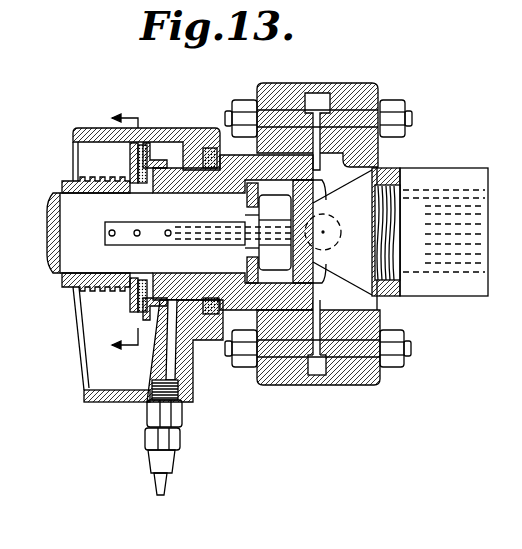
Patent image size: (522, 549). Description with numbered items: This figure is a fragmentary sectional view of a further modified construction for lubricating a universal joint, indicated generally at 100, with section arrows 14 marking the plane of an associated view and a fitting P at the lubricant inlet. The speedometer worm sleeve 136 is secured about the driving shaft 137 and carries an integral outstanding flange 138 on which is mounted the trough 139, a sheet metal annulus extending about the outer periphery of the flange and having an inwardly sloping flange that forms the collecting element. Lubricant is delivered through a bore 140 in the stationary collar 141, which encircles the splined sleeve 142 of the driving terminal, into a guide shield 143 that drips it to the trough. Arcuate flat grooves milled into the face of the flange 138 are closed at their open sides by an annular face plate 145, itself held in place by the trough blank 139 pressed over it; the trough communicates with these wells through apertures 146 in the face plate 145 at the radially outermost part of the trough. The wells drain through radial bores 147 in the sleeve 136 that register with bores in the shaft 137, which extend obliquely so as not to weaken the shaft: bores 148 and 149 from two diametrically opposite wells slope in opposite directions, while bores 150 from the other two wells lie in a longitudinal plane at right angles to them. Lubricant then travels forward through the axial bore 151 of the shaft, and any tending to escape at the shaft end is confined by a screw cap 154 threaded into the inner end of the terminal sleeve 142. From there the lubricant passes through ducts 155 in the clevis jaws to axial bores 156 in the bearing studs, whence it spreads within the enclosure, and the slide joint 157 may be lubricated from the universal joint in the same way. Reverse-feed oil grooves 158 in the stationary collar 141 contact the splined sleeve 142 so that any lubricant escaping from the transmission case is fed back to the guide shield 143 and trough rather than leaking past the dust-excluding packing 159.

The top cap housing 100 is at (305, 83).
The section line 14 is at (134, 228).
The speedometer worm sleeve 136 is at (139, 174).
The driving shaft 137 is at (63, 270).
The outstanding flange 138 is at (130, 163).
The trough 139 is at (153, 162).
The bore 140 is at (182, 378).
The stationary collar 141 is at (120, 402).
The splined sleeve 142 is at (283, 378).
The guide shield 143 is at (118, 340).
The annular face plate 145 is at (150, 195).
The apertures 146 is at (133, 153).
The radial bores 147 is at (152, 197).
The bore 148 is at (127, 203).
The bore 149 is at (107, 288).
The bores 150 is at (140, 236).
The axial bore 151 is at (207, 227).
The screw cap 154 is at (312, 264).
The ducts 155 is at (314, 205).
The axial bores 156 is at (318, 133).
The slide joint 157 is at (466, 188).
The reverse-feed oil grooves 158 is at (193, 352).
The dust-excluding packing 159 is at (245, 368).
The spark plug P is at (152, 437).